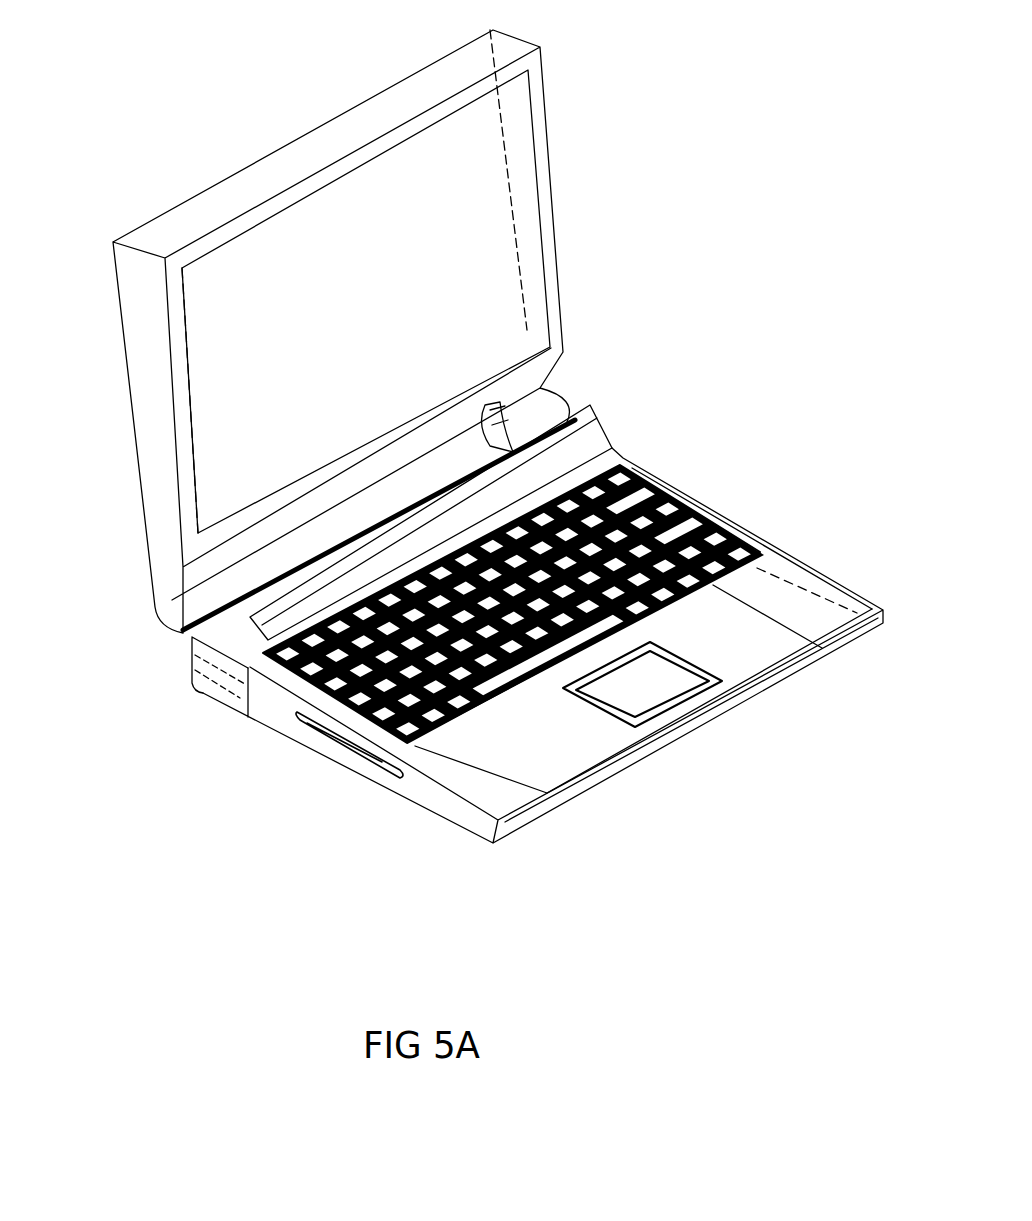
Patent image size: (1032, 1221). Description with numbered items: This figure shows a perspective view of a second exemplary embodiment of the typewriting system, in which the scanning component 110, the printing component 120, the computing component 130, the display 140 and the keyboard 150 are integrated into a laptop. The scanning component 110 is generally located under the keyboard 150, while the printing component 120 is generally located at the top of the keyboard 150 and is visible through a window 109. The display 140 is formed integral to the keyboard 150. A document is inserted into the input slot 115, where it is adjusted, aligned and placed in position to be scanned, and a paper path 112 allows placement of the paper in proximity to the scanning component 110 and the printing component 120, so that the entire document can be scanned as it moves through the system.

The paper path 112 is at (351, 484).
The display 140 is at (513, 205).
The window 109 is at (603, 435).
The computing component 130 is at (725, 505).
The input slot 115 is at (657, 753).
The keyboard 150 is at (757, 537).
The printing component 120 is at (193, 640).
The scanning component 110 is at (320, 727).